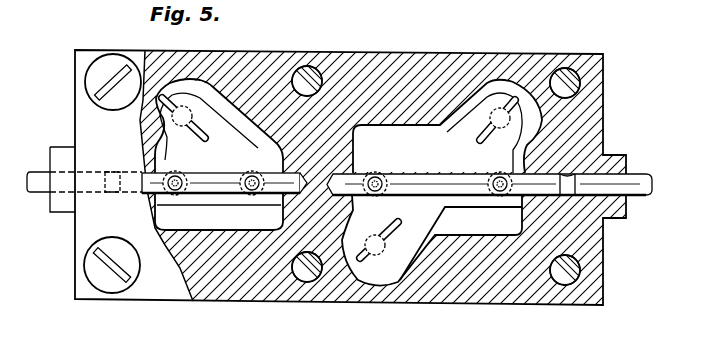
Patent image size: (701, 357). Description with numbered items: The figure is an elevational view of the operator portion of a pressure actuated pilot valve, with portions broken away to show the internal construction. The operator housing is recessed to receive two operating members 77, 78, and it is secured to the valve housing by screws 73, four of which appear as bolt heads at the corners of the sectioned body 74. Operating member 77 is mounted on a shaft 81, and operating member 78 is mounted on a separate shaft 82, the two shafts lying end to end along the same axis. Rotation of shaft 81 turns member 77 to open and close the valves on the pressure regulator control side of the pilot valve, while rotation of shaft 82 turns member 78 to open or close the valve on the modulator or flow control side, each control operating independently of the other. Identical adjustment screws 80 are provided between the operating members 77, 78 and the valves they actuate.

The screws 73 is at (105, 62).
The housing block 74 is at (437, 288).
The operating member 77 is at (447, 140).
The operating member 78 is at (237, 147).
The screws 80 is at (374, 235).
The shaft 81 is at (640, 197).
The shaft 82 is at (38, 190).